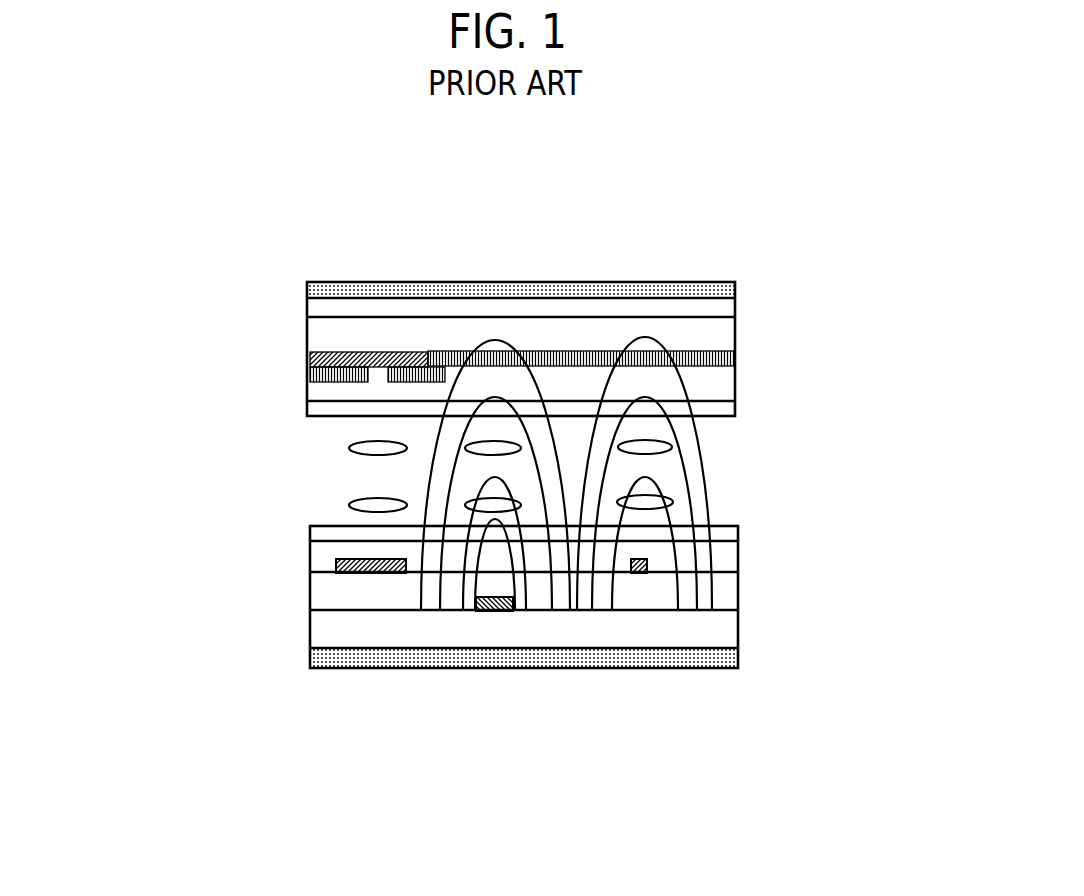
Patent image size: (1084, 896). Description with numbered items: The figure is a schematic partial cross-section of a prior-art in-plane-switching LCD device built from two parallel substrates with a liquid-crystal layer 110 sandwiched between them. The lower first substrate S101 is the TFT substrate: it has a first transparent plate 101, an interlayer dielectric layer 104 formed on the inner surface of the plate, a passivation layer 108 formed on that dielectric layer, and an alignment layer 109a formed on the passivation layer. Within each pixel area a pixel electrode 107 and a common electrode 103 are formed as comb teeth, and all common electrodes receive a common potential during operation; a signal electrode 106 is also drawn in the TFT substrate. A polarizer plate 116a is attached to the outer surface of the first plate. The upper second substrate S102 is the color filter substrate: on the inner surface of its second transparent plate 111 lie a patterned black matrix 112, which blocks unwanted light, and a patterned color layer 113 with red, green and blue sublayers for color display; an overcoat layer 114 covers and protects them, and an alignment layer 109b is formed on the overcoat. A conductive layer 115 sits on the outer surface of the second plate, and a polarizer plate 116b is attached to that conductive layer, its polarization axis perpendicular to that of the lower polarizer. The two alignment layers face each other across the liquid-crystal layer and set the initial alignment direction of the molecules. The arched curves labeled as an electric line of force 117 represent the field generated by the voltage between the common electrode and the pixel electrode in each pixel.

The second substrate S102 is at (310, 256).
The polarizer plate 116b is at (497, 281).
The conductive layer 115 is at (722, 302).
The second transparent plate 111 is at (722, 328).
The black matrix 112 is at (307, 355).
The color layer 113 is at (722, 353).
The overcoat layer 114 is at (722, 382).
The alignment layer 109b is at (307, 407).
The liquid-crystal layer 110 is at (354, 473).
The electric line of force 117 is at (484, 335).
The first substrate S101 is at (336, 688).
The alignment layer 109a is at (310, 528).
The passivation layer 108 is at (722, 552).
The interlayer dielectric layer 104 is at (735, 591).
The first transparent plate 101 is at (722, 625).
The polarizer plate 116a is at (576, 656).
The signal electrode 106 is at (336, 567).
The common electrode 103 is at (496, 612).
The pixel electrode 107 is at (640, 573).